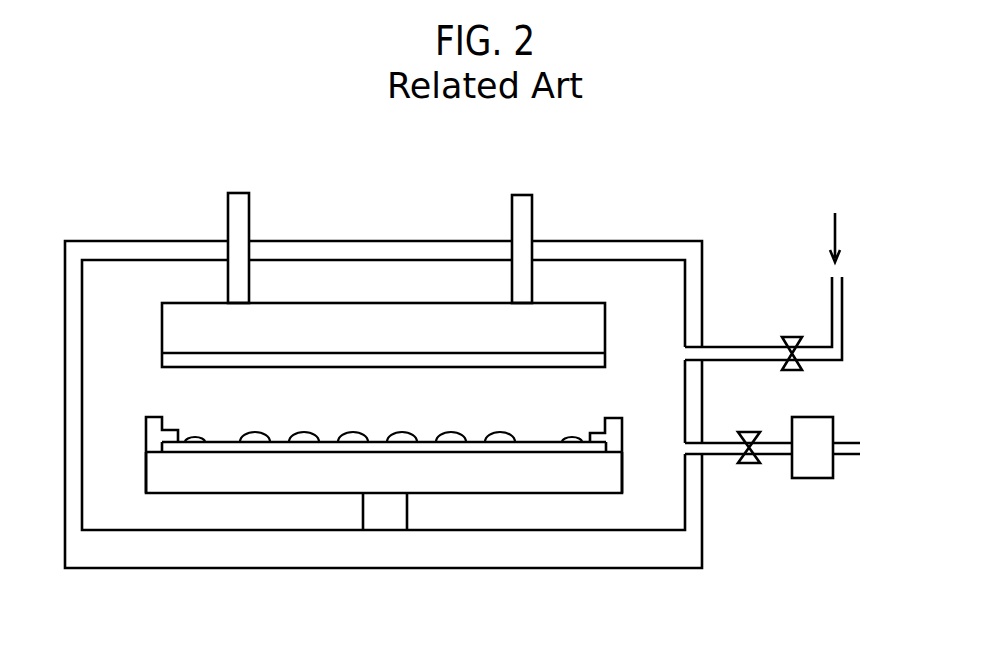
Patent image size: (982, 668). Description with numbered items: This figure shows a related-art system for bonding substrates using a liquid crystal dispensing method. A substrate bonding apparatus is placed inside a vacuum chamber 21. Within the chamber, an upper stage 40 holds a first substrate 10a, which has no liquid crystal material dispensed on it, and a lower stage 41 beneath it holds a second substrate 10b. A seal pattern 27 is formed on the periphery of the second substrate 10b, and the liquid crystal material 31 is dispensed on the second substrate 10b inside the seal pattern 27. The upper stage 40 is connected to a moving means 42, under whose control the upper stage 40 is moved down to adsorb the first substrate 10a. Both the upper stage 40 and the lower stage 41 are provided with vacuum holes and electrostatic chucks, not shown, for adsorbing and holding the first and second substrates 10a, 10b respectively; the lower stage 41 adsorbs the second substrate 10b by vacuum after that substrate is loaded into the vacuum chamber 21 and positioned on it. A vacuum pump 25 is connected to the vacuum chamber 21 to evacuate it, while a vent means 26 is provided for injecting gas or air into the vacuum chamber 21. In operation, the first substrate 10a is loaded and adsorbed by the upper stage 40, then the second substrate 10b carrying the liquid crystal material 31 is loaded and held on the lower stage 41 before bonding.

The vacuum chamber 21 is at (690, 307).
The moving means 42 is at (238, 212).
The upper stage 40 is at (524, 212).
The first substrate 10a is at (604, 362).
The second substrate 10b is at (537, 448).
The vent means 26 is at (843, 313).
The vacuum pump 25 is at (815, 468).
The lower stage 41 is at (242, 477).
The liquid crystal material 31 is at (498, 433).
The seal pattern 27 is at (196, 436).